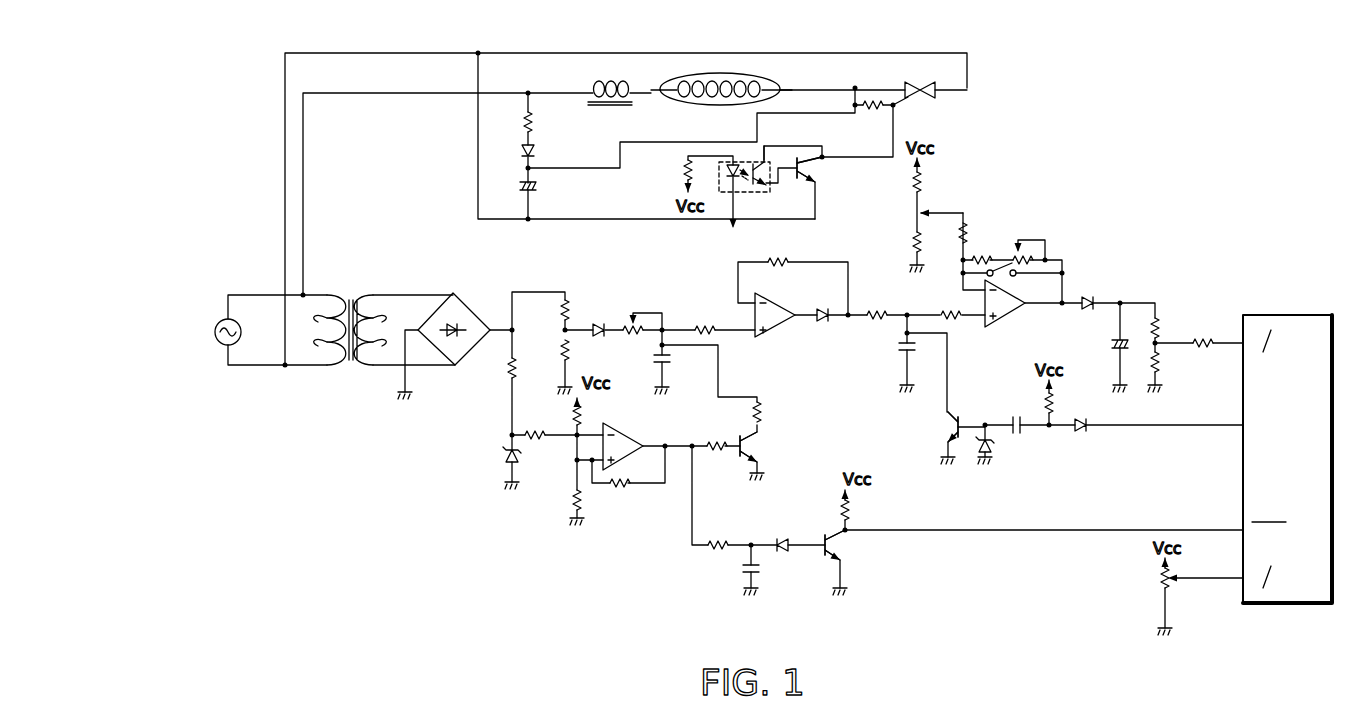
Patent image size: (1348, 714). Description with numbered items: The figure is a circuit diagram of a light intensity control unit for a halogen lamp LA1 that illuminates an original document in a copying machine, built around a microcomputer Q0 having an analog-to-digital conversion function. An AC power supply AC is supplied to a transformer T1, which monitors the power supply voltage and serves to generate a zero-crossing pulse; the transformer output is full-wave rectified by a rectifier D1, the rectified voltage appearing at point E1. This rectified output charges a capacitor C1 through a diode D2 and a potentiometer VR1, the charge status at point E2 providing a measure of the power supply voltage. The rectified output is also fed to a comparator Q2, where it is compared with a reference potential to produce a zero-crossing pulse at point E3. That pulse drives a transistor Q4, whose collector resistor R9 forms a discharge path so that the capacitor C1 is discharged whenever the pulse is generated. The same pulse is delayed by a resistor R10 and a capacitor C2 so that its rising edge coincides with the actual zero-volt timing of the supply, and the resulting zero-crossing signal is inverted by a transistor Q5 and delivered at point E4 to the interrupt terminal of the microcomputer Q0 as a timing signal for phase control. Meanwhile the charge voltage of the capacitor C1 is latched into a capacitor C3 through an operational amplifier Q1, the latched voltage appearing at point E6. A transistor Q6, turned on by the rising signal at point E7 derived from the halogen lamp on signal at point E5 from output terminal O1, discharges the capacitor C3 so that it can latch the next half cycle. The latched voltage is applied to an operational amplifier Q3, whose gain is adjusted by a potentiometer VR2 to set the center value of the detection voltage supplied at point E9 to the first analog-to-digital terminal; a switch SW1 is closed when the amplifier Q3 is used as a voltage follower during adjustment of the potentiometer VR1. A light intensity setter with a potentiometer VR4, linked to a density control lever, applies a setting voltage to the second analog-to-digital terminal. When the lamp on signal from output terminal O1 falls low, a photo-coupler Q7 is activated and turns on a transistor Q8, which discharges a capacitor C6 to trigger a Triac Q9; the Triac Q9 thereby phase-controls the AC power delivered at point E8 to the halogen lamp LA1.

The point E8 is at (790, 84).
The halogen lamp LA1 is at (675, 106).
The transformer T1 is at (352, 297).
The Triac Q9 is at (936, 96).
The capacitor C6 is at (546, 190).
The photo-coupler Q7 is at (761, 195).
The transistor Q8 is at (820, 175).
The output terminal O1 is at (738, 245).
The potentiometer VR2 is at (921, 210).
The AC power supply AC is at (216, 345).
The rectifier D1 is at (462, 296).
The point E1 is at (519, 288).
The potentiometer VR1 is at (630, 312).
The diode D2 is at (601, 338).
The point E2 is at (679, 326).
The capacitor C1 is at (670, 360).
The operational amplifier Q1 is at (776, 330).
The point E6 is at (904, 310).
The capacitor C3 is at (897, 346).
The comparator Q2 is at (624, 433).
The point E3 is at (691, 442).
The resistor R9 is at (765, 410).
The transistor Q4 is at (760, 445).
The resistor R10 is at (722, 540).
The capacitor C2 is at (762, 568).
The transistor Q5 is at (842, 546).
The point E4 is at (970, 534).
The operational amplifier Q3 is at (1010, 318).
The switch SW1 is at (1018, 281).
The transistor Q6 is at (946, 427).
The point E7 is at (985, 420).
The point E5 is at (1148, 430).
The point E9 is at (1222, 347).
The potentiometer VR4 is at (1160, 578).
The microcomputer Q0 is at (1268, 604).